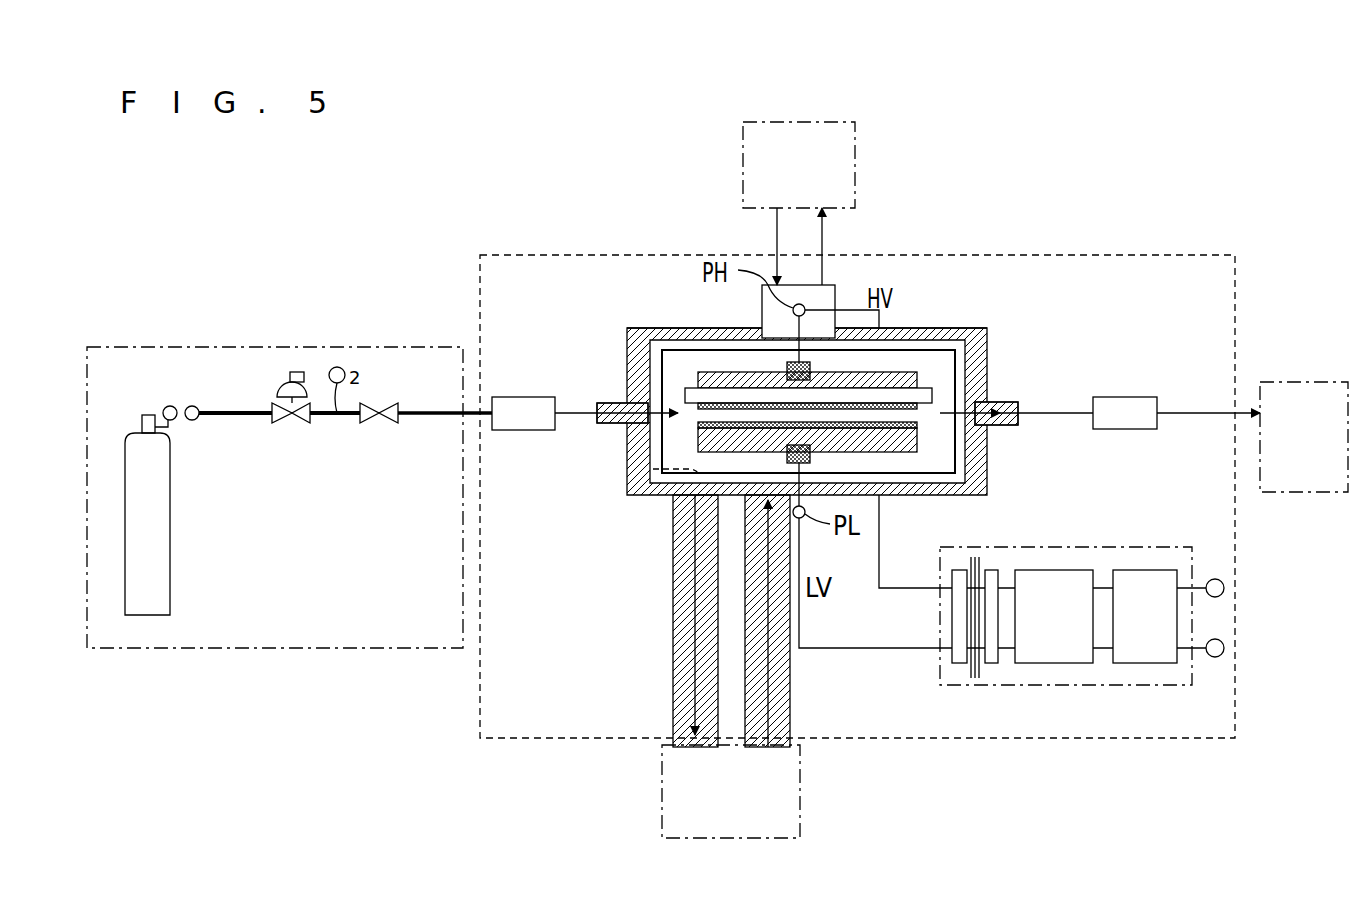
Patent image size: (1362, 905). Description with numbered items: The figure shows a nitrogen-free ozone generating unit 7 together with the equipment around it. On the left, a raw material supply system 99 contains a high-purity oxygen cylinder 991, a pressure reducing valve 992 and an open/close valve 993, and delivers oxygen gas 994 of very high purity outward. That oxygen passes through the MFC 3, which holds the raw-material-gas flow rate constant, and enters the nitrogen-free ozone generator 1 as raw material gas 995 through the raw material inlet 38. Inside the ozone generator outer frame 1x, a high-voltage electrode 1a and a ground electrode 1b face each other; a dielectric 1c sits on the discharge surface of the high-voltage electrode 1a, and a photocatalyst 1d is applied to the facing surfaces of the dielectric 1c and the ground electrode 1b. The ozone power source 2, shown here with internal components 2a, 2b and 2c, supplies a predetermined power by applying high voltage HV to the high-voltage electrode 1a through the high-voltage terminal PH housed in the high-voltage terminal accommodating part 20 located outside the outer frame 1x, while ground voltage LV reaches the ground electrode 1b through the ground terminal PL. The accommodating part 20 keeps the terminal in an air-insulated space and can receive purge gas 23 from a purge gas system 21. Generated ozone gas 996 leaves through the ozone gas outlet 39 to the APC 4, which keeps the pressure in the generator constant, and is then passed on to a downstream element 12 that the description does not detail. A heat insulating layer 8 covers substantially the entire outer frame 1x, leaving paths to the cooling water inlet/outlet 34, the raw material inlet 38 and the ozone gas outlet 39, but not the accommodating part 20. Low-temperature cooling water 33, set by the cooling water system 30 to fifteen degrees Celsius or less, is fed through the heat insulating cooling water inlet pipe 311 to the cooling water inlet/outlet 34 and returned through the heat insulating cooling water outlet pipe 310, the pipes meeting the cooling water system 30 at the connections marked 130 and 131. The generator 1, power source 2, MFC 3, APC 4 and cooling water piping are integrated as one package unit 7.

The nitrogen-free ozone generator 1 is at (677, 326).
The high-voltage electrode 1a is at (728, 371).
The ground electrode 1b is at (737, 452).
The dielectric 1c is at (925, 387).
The photocatalyst 1d is at (698, 411).
The ozone generator outer frame 1x is at (950, 348).
The ozone power source 2 is at (1037, 546).
The high-frequency power source 2a is at (1143, 570).
The matching box 2b is at (1070, 570).
The capacitor 2c is at (960, 570).
The MFC 3 is at (525, 432).
The APC 4 is at (1132, 396).
The nitrogen-free ozone generating unit 7 is at (1103, 255).
The heat insulating layer 8 is at (973, 328).
The exhaust pump 12 is at (1303, 381).
The high-voltage terminal accommodating part 20 is at (835, 287).
The purge gas system 21 is at (800, 121).
The purge gas 23 is at (775, 223).
The cooling water system 30 is at (800, 827).
The low-temperature cooling water 33 is at (695, 606).
The cooling water inlet/outlet 34 is at (626, 496).
The raw material inlet 38 is at (628, 437).
The ozone gas outlet 39 is at (987, 402).
The raw material supply system 99 is at (277, 345).
The coolant outlet 130 is at (641, 778).
The coolant inlet 131 is at (813, 778).
The heat insulating cooling water outlet pipe 310 is at (649, 621).
The heat insulating cooling water inlet pipe 311 is at (806, 621).
The high-purity oxygen cylinder 991 is at (170, 533).
The pressure reducing valve 992 is at (285, 423).
The open/close valve 993 is at (373, 423).
The oxygen gas 994 is at (427, 416).
The raw material gas 995 is at (573, 410).
The ozone gas 996 is at (1053, 410).